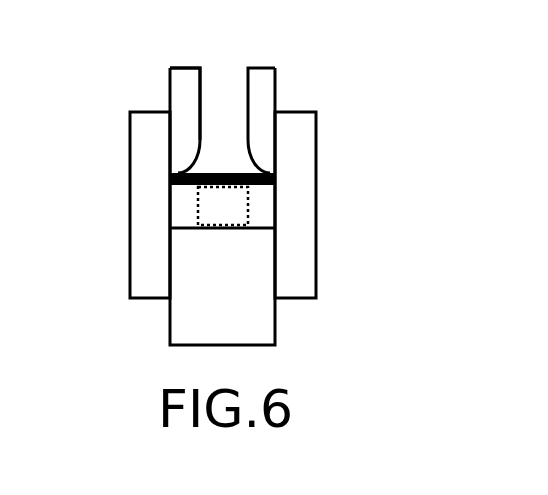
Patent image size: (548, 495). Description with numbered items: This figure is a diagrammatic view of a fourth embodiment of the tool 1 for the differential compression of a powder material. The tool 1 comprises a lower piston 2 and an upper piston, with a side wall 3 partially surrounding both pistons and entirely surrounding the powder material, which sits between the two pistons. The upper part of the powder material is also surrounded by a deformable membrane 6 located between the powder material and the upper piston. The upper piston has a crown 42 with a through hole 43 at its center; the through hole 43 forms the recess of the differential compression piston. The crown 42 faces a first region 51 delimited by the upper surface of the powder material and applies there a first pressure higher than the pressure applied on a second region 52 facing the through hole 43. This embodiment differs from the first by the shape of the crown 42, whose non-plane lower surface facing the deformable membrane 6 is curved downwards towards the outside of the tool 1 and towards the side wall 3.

The tool 1 is at (366, 103).
The lower piston 2 is at (190, 323).
The side wall 3 is at (145, 162).
The deformable membrane 6 is at (277, 178).
The crown 42 is at (183, 92).
The through hole 43 is at (220, 93).
The first region 51 is at (263, 210).
The second region 52 is at (210, 202).